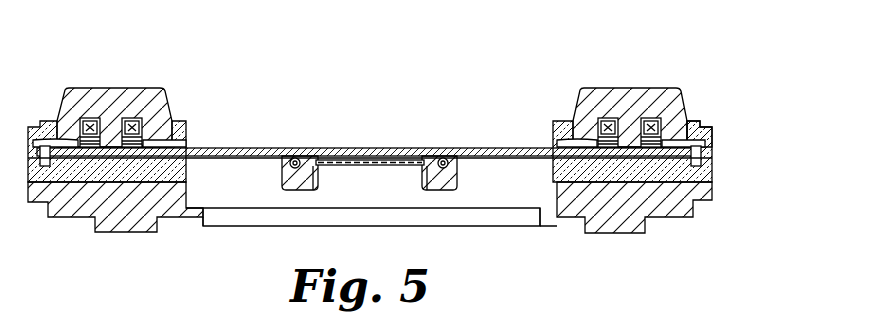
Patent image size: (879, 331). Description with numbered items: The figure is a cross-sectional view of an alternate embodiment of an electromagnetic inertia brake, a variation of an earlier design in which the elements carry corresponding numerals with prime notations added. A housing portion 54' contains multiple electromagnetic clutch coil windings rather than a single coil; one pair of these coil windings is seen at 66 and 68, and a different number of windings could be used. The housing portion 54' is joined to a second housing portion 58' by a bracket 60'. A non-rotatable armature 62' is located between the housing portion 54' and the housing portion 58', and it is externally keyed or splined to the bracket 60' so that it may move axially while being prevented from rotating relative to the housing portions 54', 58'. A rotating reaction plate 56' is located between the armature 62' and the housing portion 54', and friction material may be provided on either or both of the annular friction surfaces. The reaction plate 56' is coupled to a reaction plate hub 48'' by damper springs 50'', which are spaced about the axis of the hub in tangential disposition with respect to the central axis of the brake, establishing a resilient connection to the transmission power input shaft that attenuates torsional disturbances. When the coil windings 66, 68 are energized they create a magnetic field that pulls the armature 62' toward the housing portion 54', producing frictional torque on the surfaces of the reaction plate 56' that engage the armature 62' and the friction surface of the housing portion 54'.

The reaction plate hub 48'' is at (269, 151).
The damper springs 50'' is at (386, 134).
The housing portion 54' is at (635, 78).
The reaction plate 56' is at (370, 122).
The housing portion 58' is at (634, 232).
The bracket 60' is at (730, 120).
The armature 62' is at (644, 186).
The coil winding 66 is at (608, 125).
The coil winding 68 is at (90, 128).